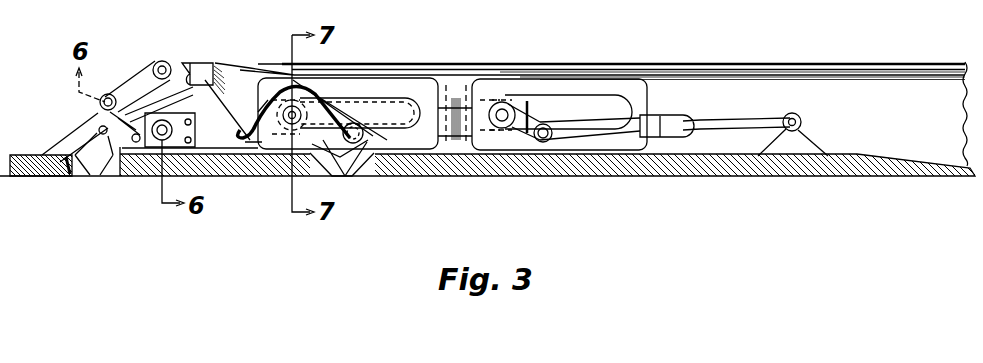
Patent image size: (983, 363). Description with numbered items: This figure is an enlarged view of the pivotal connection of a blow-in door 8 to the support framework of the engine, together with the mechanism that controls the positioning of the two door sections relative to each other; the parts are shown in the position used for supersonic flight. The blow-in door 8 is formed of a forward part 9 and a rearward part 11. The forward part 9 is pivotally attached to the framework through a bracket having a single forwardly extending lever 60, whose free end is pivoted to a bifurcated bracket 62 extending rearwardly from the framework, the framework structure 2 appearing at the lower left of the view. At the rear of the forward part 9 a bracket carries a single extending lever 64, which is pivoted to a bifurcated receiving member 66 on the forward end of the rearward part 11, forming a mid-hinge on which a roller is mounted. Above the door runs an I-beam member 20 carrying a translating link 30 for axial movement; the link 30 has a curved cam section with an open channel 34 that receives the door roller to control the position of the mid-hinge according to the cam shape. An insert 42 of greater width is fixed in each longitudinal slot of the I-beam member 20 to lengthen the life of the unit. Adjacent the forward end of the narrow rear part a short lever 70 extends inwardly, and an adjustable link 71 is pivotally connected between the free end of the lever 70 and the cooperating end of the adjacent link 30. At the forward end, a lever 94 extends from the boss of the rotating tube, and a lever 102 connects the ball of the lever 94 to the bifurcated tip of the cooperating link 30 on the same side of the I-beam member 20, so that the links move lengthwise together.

The base member 2 is at (46, 176).
The blow-in door 8 is at (590, 188).
The forward part 9 is at (233, 170).
The rearward part 11 is at (522, 170).
The I-beam member 20 is at (898, 121).
The translating link 30 is at (464, 109).
The open channel 34 is at (255, 104).
The insert 42 is at (370, 85).
The lever 60 is at (110, 160).
The bifurcated bracket 62 is at (76, 139).
The lever 64 is at (340, 163).
The bifurcated receiving member 66 is at (373, 167).
The short lever 70 is at (810, 143).
The adjustable link 71 is at (736, 118).
The lever 94 is at (123, 102).
The lever 102 is at (130, 93).